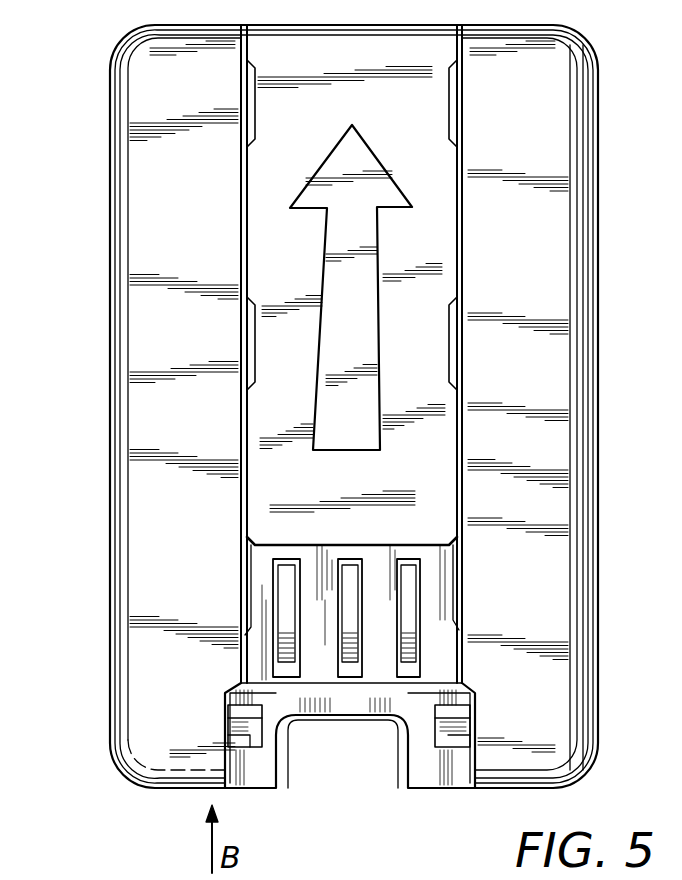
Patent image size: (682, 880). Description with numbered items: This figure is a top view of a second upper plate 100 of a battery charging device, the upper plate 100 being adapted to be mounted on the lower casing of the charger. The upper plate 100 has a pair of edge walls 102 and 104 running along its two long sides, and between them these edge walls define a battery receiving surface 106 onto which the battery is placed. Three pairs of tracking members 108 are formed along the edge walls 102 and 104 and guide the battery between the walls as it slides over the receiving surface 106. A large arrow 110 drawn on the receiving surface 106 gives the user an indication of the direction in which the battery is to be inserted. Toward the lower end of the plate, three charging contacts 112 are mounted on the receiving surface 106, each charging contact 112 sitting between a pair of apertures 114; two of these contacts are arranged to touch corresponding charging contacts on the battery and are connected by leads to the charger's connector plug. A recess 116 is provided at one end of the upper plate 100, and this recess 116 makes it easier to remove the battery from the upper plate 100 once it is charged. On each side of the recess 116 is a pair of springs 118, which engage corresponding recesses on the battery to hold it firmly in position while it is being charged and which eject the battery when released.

The upper plate 100 is at (172, 270).
The edge wall 102 is at (140, 386).
The edge wall 104 is at (538, 400).
The battery receiving surface 106 is at (432, 212).
The tracking members 108 is at (452, 345).
The arrow 110 is at (322, 290).
The charging contacts 112 is at (405, 620).
The apertures 114 is at (410, 567).
The recess 116 is at (345, 746).
The springs 118 is at (238, 733).